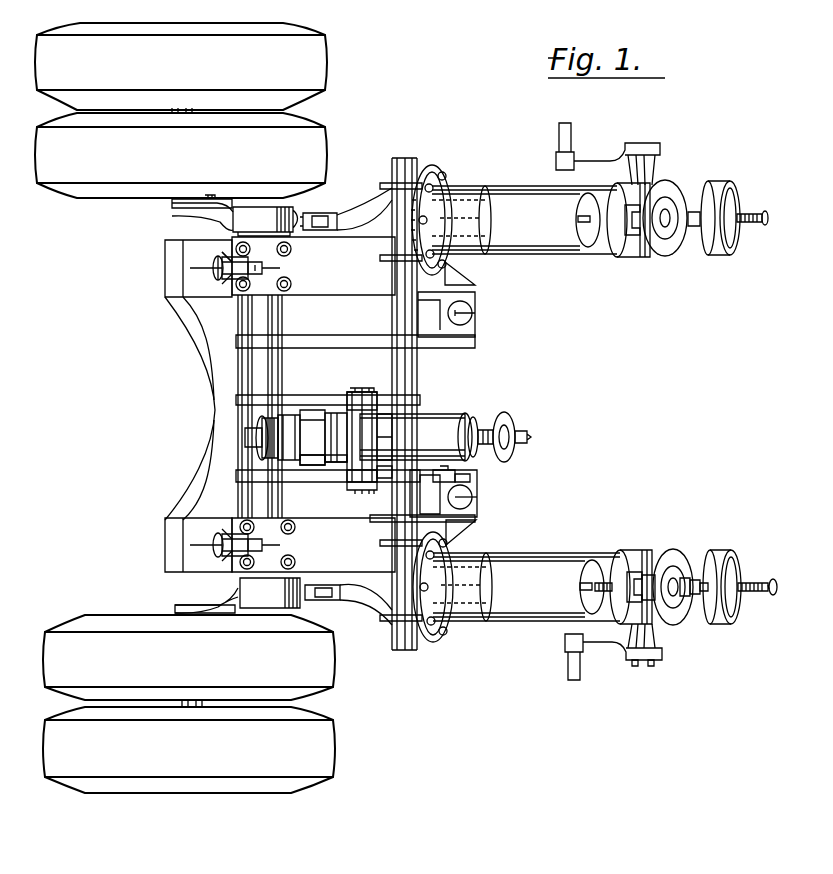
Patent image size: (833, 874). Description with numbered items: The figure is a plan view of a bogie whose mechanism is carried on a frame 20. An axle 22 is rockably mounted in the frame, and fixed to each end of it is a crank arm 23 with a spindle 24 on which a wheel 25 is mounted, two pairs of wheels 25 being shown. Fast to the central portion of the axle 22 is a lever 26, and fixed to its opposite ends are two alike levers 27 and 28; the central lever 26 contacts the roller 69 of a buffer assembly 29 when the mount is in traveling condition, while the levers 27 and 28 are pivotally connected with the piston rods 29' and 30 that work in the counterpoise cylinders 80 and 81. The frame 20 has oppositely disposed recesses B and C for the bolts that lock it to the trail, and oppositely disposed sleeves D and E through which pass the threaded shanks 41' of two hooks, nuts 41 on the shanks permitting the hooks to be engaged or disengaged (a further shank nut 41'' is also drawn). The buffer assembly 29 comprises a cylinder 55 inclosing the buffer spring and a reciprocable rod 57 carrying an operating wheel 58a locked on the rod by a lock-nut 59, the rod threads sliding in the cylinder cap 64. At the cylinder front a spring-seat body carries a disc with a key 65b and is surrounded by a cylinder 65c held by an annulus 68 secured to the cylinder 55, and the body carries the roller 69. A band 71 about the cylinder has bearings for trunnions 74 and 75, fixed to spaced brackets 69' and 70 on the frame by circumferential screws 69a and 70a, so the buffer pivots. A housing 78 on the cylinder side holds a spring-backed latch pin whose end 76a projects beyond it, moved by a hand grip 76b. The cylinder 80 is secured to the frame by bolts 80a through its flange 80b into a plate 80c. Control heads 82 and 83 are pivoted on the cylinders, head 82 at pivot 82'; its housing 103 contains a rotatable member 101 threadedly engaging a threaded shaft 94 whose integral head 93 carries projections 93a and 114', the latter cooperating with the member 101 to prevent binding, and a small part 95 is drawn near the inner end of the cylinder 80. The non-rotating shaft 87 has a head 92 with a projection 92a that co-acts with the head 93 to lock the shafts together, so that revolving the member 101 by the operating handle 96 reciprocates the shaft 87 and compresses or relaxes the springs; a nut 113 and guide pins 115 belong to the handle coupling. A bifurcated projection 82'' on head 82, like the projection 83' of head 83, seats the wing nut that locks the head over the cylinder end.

The frame 20 is at (213, 360).
The axle 22 is at (282, 315).
The crank arm 23 is at (208, 208).
The spindle 24 is at (172, 204).
The wheel 25 is at (46, 112).
The lever 26 is at (245, 442).
The lever 27 is at (316, 586).
The lever 28 is at (318, 215).
The buffer assembly 29 is at (412, 437).
The piston rod 29' is at (366, 604).
The piston rod 30 is at (352, 216).
The nut 41 is at (219, 266).
The threaded shank 41' is at (256, 260).
The adjusting rod 41'' is at (242, 554).
The cylinder 55 is at (428, 420).
The reciprocable rod 57 is at (485, 430).
The operating wheel 58a is at (507, 421).
The lock-nut 59 is at (524, 436).
The cylinder cap 64 is at (474, 418).
The key 65b is at (284, 418).
The cylinder 65c is at (305, 418).
The annulus 68 is at (314, 466).
The roller 69 is at (246, 434).
The bracket 69' is at (336, 423).
The screws 69a is at (357, 404).
The bracket 70 is at (336, 468).
The screws 70a is at (356, 490).
The band 71 is at (367, 437).
The trunnion 74 is at (377, 410).
The trunnion 75 is at (378, 482).
The pin end 76a is at (434, 476).
The hand grip 76b is at (470, 478).
The cylindrical housing 78 is at (430, 478).
The counterpoise cylinder 80 is at (533, 617).
The bolts 80a is at (448, 178).
The flange 80b is at (444, 172).
The plate 80c is at (426, 172).
The counterpoise cylinder 81 is at (540, 250).
The control head 82 is at (629, 592).
The pivot 82' is at (734, 197).
The bifurcated projection 82'' is at (623, 565).
The control head 83 is at (608, 200).
The projection 83' is at (648, 229).
The shaft 87 is at (748, 582).
The head 92 is at (774, 595).
The projection 92a is at (778, 586).
The head 93 is at (698, 596).
The projection 93a is at (706, 582).
The threaded shaft 94 is at (596, 592).
The key 95 is at (580, 586).
The operating handle 96 is at (581, 667).
The centrally disposed member 101 is at (676, 544).
The housing 103 is at (648, 573).
The nut 113 is at (641, 668).
The projection 114' is at (697, 565).
The guide pins 115 is at (675, 596).
The recess B is at (472, 313).
The recess C is at (472, 497).
The sleeve D is at (215, 277).
The sleeve E is at (224, 538).